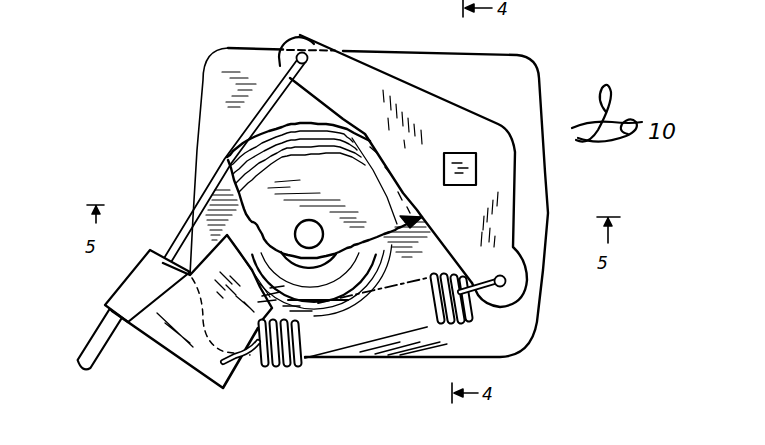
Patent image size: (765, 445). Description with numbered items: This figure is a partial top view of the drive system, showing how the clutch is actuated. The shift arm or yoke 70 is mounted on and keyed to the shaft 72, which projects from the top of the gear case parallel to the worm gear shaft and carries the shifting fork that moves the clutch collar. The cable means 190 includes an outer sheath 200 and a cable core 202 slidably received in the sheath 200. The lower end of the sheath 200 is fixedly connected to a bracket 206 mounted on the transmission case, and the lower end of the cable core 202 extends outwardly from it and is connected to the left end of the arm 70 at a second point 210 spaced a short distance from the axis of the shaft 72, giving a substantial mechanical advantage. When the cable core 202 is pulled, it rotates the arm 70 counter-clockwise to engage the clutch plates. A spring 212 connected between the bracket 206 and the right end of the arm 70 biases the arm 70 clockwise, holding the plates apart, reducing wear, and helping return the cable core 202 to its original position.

The shift arm or yoke 70 is at (436, 102).
The shaft 72 is at (465, 152).
The cable means 190 is at (98, 334).
The outer sheath 200 is at (104, 355).
The cable core 202 is at (184, 216).
The bracket 206 is at (167, 335).
The second point 210 is at (312, 49).
The spring 212 is at (290, 366).